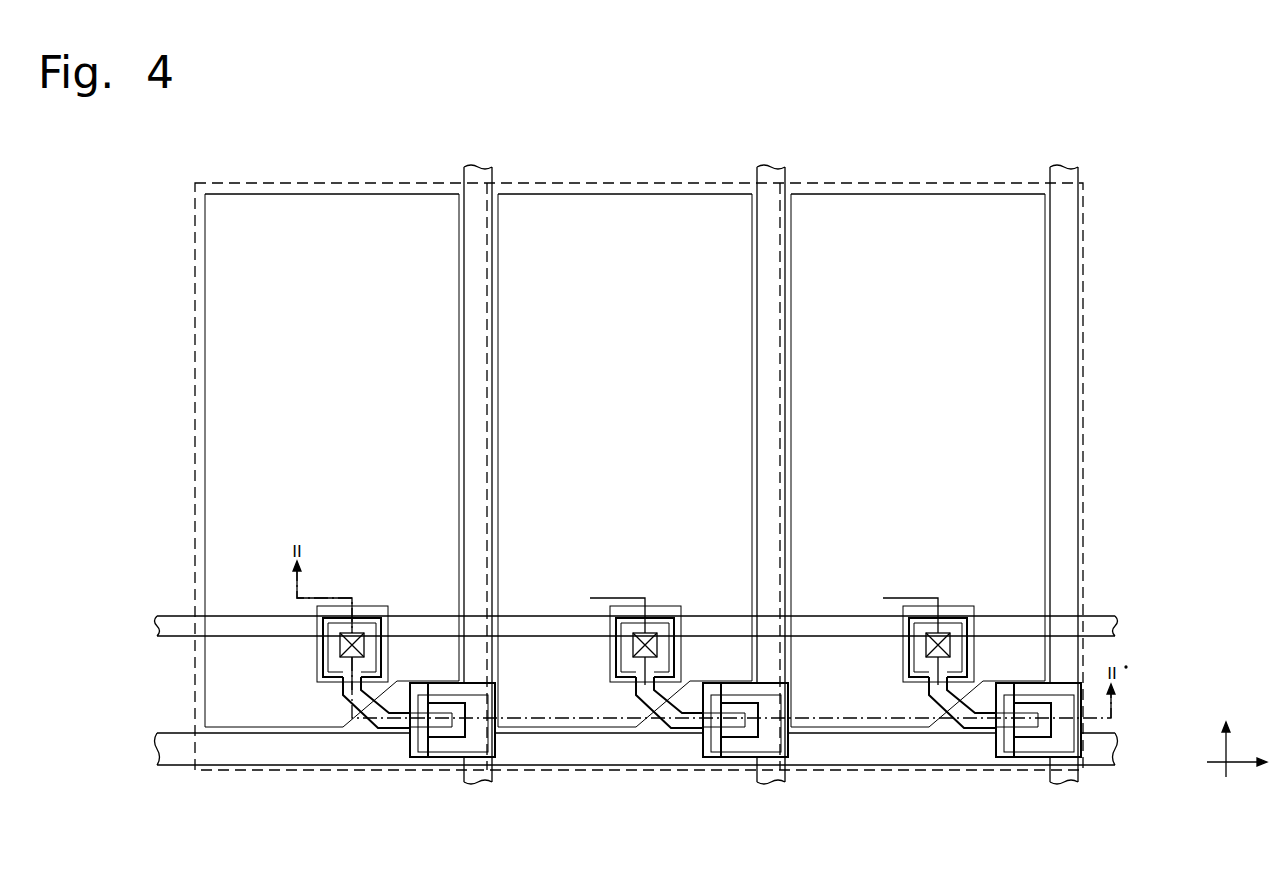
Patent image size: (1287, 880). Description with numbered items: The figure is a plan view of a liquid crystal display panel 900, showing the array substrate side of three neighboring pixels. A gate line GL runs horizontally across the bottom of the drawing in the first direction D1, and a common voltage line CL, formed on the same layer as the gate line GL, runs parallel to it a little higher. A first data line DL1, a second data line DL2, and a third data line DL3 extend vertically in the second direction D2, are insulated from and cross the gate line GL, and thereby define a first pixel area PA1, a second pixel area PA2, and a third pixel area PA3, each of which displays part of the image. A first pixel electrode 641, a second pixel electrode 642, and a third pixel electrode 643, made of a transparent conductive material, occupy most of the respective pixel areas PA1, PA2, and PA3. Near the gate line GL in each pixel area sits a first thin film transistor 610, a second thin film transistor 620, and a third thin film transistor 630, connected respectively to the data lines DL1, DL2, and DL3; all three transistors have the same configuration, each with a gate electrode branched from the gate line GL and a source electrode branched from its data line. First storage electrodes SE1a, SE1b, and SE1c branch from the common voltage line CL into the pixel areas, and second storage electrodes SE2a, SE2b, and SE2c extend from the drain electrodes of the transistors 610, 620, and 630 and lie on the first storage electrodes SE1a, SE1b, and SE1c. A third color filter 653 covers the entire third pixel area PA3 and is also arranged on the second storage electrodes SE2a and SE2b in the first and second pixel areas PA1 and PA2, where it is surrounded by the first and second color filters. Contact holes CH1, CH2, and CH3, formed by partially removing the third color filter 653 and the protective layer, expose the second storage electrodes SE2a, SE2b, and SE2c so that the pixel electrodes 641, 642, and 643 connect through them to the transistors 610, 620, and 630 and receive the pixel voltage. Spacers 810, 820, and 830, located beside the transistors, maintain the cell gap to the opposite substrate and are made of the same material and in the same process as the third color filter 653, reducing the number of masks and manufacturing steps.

The liquid crystal display panel 900 is at (1062, 99).
The common voltage line CL is at (153, 623).
The gate line GL is at (153, 743).
The first direction D1 is at (1222, 762).
The second direction D2 is at (1227, 762).
The first pixel area PA1 is at (398, 207).
The second pixel area PA2 is at (691, 207).
The third pixel area PA3 is at (983, 207).
The first pixel electrode 641 is at (305, 194).
The second pixel electrode 642 is at (598, 194).
The third pixel electrode 643 is at (890, 194).
The first data line DL1 is at (477, 784).
The second data line DL2 is at (770, 784).
The third data line DL3 is at (1063, 784).
The second storage electrode SE2a is at (384, 624).
The second storage electrode SE2b is at (677, 624).
The second storage electrode SE2c is at (970, 624).
The third color filter 653 is at (317, 660).
The contact hole CH1 is at (355, 633).
The contact hole CH2 is at (648, 633).
The contact hole CH3 is at (941, 633).
The first storage electrode SE1a is at (327, 685).
The first storage electrode SE1b is at (620, 685).
The first storage electrode SE1c is at (913, 685).
The first thin film transistor 610 is at (413, 762).
The second thin film transistor 620 is at (706, 762).
The third thin film transistor 630 is at (999, 762).
The spacer 810 is at (490, 748).
The spacer 820 is at (783, 748).
The spacer 830 is at (1076, 748).